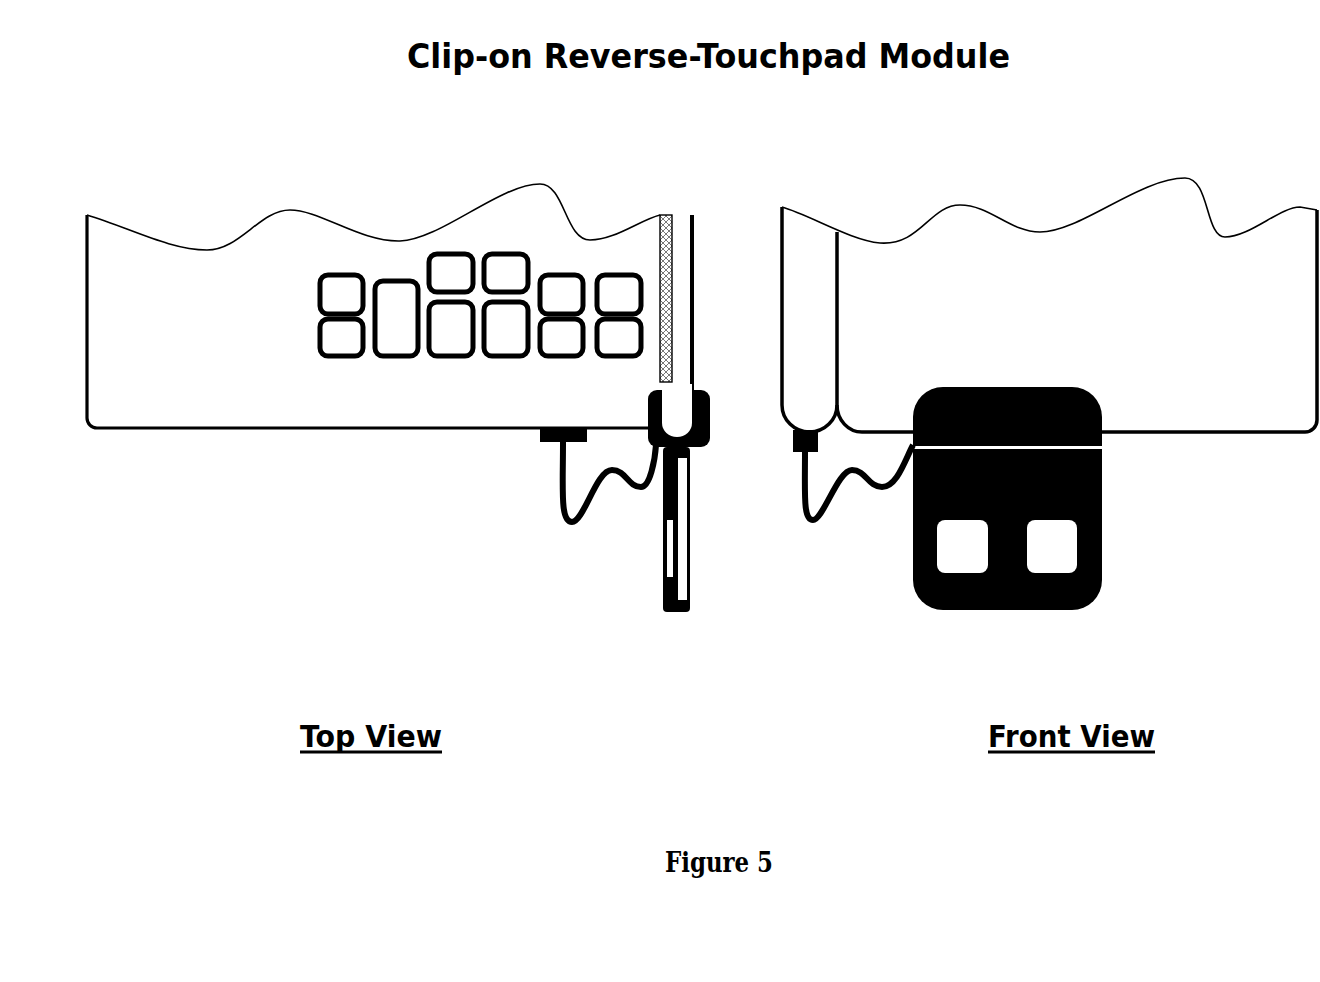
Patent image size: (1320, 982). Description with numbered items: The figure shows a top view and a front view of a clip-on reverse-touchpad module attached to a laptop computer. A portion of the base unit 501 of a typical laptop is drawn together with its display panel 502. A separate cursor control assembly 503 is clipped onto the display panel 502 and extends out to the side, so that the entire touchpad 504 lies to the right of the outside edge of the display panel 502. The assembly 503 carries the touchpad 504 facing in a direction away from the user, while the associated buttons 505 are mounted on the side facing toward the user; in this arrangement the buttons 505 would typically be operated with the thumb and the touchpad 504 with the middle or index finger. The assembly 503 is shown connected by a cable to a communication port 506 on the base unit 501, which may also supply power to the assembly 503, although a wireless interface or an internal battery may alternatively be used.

The base unit 501 is at (243, 230).
The display panel 502 is at (685, 202).
The cursor control assembly 503 is at (708, 445).
The touchpad 504 is at (695, 560).
The buttons 505 is at (662, 558).
The communication port 506 is at (533, 450).